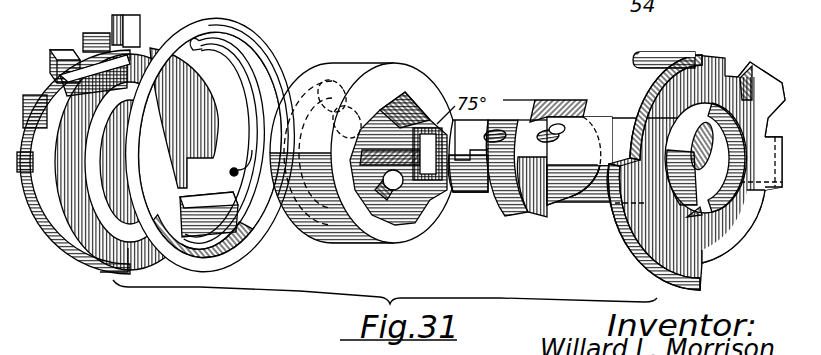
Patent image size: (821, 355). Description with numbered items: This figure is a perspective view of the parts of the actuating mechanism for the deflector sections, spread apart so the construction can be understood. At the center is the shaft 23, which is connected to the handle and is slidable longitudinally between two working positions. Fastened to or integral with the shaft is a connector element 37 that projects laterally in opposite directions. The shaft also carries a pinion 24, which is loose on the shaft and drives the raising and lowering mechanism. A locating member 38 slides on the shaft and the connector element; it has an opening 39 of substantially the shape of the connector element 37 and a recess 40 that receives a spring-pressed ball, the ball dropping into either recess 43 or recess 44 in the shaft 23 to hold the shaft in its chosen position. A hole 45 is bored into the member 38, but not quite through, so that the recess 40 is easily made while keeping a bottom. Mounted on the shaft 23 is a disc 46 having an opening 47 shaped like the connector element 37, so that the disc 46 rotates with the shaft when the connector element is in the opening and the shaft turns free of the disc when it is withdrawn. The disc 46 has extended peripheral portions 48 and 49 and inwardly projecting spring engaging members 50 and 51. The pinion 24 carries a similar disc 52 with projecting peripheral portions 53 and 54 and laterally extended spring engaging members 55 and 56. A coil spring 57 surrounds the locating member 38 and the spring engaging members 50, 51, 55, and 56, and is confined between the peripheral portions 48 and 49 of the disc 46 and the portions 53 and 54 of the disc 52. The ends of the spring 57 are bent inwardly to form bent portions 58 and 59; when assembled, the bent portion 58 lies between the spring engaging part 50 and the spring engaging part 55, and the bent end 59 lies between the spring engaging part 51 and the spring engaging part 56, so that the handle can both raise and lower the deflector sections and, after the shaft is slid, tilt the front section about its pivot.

The shaft 23 is at (593, 199).
The pinion 24 is at (68, 50).
The connector element 37 is at (511, 220).
The locating member 38 is at (322, 238).
The opening 39 is at (427, 130).
The recess 40 is at (357, 113).
The recess 43 is at (496, 128).
The recess 44 is at (552, 142).
The hole 45 is at (405, 193).
The disc 46 is at (752, 214).
The opening 47 is at (705, 188).
The extended peripheral portion 48 is at (645, 267).
The extended peripheral portion 49 is at (782, 87).
The spring engaging member 50 is at (660, 56).
The spring engaging member 51 is at (782, 181).
The disc 52 is at (103, 250).
The projecting peripheral portion 53 is at (213, 100).
The projecting peripheral portion 54 is at (57, 238).
The spring engaging member 55 is at (108, 60).
The spring engaging member 56 is at (202, 203).
The coil spring 57 is at (258, 64).
The bent portion 58 is at (196, 54).
The bent end 59 is at (238, 167).